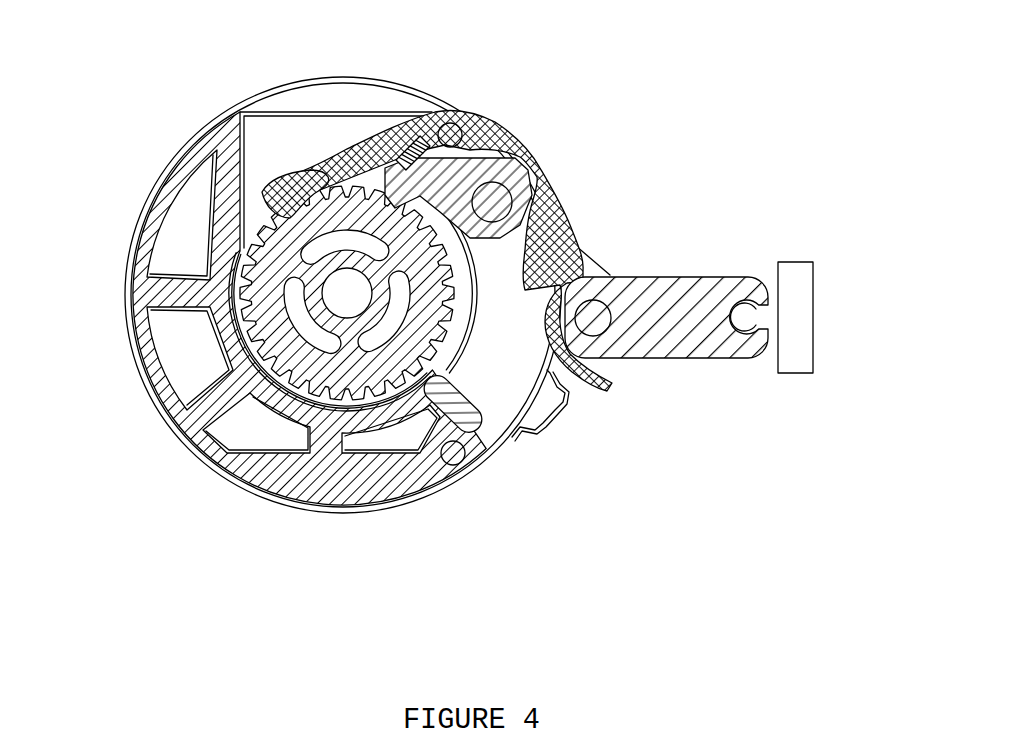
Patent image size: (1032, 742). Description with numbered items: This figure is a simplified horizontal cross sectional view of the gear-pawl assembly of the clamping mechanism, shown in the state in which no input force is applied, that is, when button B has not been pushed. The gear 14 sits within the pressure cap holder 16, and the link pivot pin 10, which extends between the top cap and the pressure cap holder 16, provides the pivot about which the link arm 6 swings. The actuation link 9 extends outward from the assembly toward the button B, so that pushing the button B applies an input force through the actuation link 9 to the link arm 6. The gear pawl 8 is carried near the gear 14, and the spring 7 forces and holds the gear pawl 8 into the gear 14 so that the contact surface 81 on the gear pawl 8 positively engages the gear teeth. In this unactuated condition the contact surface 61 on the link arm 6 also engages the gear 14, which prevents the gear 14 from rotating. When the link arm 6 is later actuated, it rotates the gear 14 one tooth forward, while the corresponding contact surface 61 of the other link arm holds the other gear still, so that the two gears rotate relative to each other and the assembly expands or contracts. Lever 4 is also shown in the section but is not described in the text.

The lever 4 is at (553, 230).
The link arm 6 is at (583, 262).
The spring 7 is at (432, 92).
The gear pawl 8 is at (487, 135).
The actuation link 9 is at (673, 365).
The link pivot pin 10 is at (473, 96).
The gear 14 is at (290, 242).
The pressure cap holder 16 is at (215, 460).
The contact surface 61 is at (313, 172).
The contact surface 81 is at (374, 150).
The button B is at (805, 348).